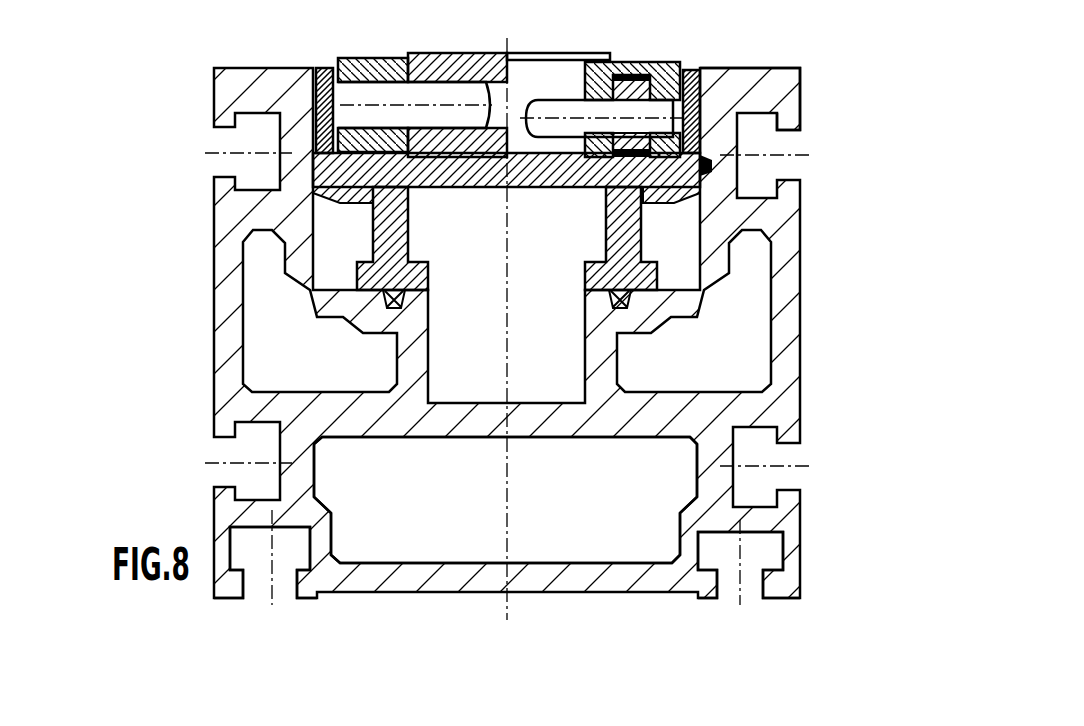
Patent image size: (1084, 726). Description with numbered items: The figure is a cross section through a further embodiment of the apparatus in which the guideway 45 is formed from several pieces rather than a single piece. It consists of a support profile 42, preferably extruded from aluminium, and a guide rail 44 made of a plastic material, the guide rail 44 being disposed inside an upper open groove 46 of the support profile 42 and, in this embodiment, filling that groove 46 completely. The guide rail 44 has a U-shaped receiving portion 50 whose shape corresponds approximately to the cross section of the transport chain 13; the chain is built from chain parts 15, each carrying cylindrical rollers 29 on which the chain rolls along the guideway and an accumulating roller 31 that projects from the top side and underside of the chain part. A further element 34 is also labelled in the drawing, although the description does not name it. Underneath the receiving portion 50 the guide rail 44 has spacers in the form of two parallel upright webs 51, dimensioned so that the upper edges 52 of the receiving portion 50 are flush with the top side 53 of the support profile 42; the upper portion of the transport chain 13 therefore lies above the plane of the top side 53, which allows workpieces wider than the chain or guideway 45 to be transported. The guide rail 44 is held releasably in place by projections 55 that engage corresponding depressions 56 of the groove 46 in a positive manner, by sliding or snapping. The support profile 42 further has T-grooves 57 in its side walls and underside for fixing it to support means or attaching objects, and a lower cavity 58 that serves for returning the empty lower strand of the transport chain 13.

The transport chain 13 is at (552, 46).
The chain part 15 is at (378, 58).
The roller 29 is at (632, 62).
The accumulating roller 31 is at (488, 98).
The recess 34 is at (460, 188).
The support profile 42 is at (800, 307).
The guide rail 44 is at (549, 188).
The guideway 45 is at (830, 180).
The groove 46 is at (687, 254).
The receiving portion 50 is at (708, 168).
The web 51 is at (372, 217).
The upper edge 52 is at (326, 67).
The top side 53 is at (762, 73).
The projection 55 is at (313, 160).
The depression 56 is at (714, 163).
The T-groove 57 is at (763, 486).
The lower cavity 58 is at (577, 507).